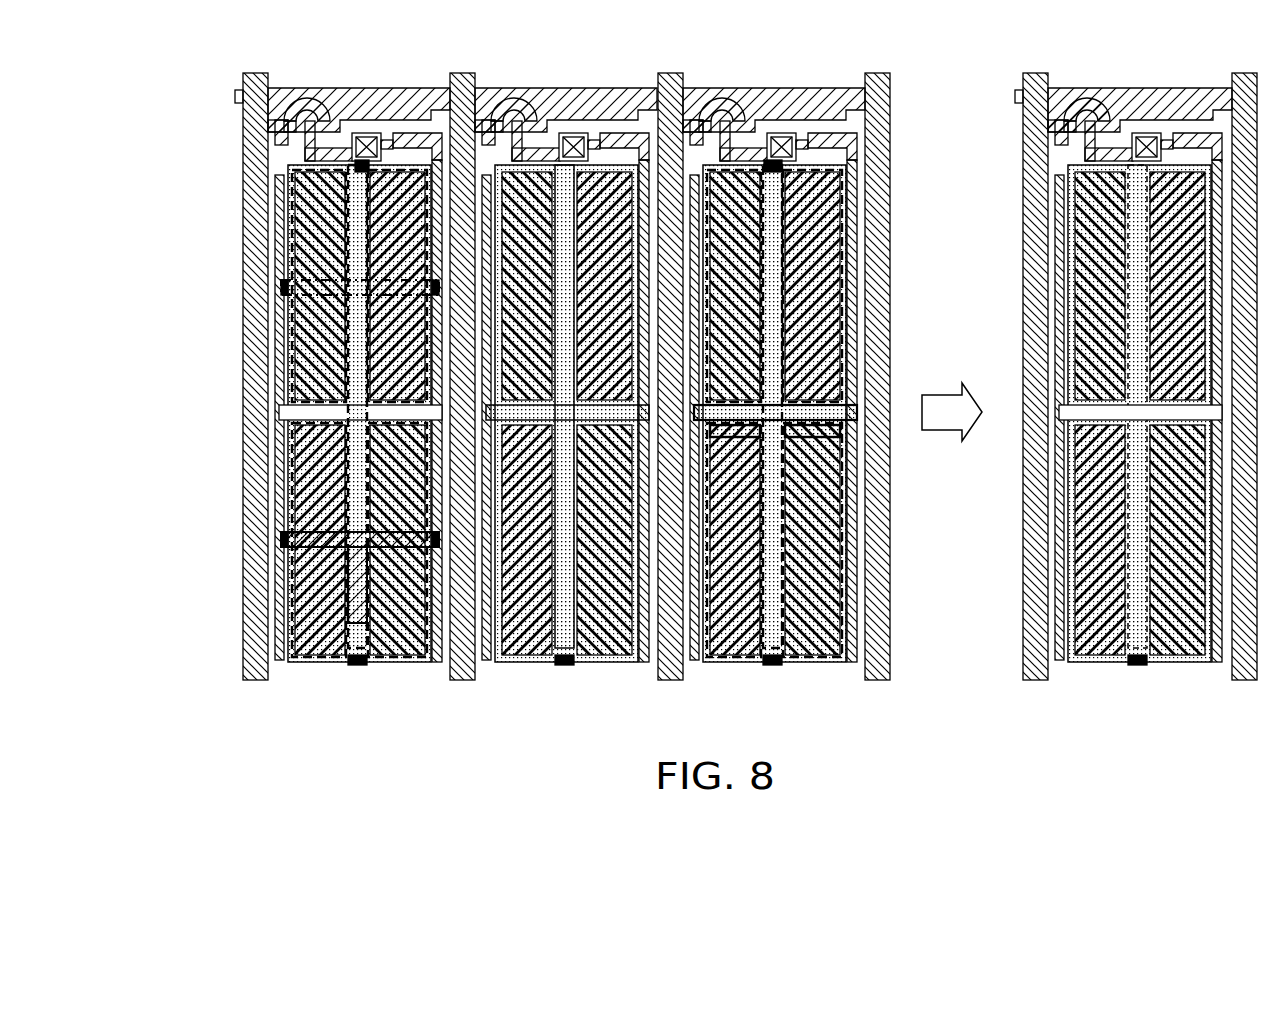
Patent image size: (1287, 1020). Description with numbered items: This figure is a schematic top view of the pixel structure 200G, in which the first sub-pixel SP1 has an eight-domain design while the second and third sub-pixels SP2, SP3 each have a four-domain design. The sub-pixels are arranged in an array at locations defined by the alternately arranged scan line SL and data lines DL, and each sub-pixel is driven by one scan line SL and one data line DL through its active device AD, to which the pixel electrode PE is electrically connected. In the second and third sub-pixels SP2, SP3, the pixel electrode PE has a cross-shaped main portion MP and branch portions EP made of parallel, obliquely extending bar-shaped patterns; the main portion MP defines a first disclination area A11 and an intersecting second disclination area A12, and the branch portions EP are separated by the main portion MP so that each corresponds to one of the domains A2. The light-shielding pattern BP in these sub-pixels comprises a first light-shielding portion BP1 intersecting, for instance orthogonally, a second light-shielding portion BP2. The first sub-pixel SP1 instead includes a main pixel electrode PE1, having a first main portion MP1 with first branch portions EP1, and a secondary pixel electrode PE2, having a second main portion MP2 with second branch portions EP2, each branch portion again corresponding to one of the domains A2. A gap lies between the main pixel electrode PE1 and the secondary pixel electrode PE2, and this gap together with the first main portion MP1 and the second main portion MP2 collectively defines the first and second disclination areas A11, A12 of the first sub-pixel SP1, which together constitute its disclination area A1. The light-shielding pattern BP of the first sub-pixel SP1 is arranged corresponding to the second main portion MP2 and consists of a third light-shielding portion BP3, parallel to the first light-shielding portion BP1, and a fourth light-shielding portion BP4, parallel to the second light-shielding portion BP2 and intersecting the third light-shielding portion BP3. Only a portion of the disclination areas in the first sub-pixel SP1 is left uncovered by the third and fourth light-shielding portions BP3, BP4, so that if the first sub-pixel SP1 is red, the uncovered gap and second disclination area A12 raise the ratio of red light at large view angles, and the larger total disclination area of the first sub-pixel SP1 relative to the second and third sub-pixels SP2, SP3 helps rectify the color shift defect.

The active device AD is at (300, 82).
The scan line SL is at (400, 87).
The data line DL is at (243, 154).
The domain A2 is at (776, 162).
The disclination area A1 is at (566, 404).
The second disclination area A12 is at (352, 218).
The first disclination area A11 is at (300, 282).
The main pixel electrode PE1 is at (285, 286).
The first main portion MP1 is at (270, 286).
The first branch portion EP1 is at (194, 330).
The secondary pixel electrode PE2 is at (281, 540).
The second branch portion EP2 is at (298, 488).
The second main portion MP2 is at (298, 527).
The light-shielding pattern BP is at (565, 537).
The first light-shielding portion BP1 is at (833, 573).
The second light-shielding portion BP2 is at (803, 612).
The third light-shielding portion BP3 is at (294, 587).
The fourth light-shielding portion BP4 is at (343, 616).
The pixel electrode PE is at (846, 540).
The main portion MP is at (797, 425).
The branch portion EP is at (790, 440).
The first sub-pixel SP1 is at (364, 686).
The second sub-pixel SP2 is at (571, 686).
The third sub-pixel SP3 is at (787, 686).
The pixel structure 200G is at (225, 745).